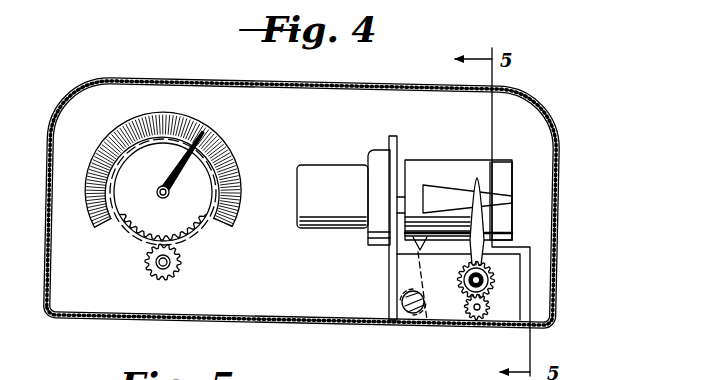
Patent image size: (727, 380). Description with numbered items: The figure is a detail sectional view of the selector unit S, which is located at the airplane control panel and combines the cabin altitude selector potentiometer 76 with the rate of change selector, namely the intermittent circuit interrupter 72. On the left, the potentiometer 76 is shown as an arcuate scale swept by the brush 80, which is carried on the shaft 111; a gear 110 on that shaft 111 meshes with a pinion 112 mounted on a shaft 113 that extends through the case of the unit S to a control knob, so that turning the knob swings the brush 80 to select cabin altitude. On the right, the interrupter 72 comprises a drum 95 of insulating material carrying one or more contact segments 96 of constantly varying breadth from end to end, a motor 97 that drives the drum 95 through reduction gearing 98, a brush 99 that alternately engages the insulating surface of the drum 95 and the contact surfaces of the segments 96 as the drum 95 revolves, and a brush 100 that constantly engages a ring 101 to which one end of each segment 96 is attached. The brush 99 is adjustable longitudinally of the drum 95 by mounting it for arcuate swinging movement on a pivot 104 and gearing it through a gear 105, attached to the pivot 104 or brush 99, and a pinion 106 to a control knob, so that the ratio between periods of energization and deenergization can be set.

The selector unit S is at (221, 78).
The cabin altitude selector potentiometer 76 is at (86, 203).
The brush 80 is at (182, 163).
The shaft 111 is at (157, 197).
The gear 110 is at (192, 233).
The pinion 112 is at (177, 272).
The shaft 113 is at (150, 263).
The motor 97 is at (328, 199).
The reduction gearing 98 is at (373, 153).
The ring 101 is at (412, 162).
The contact segments 96 is at (445, 193).
The drum 95 is at (500, 166).
The intermittent circuit interrupter 72 is at (516, 190).
The brush 99 is at (478, 227).
The brush 100 is at (416, 252).
The pivot 104 is at (490, 280).
The gear 105 is at (488, 289).
The pinion 106 is at (466, 313).